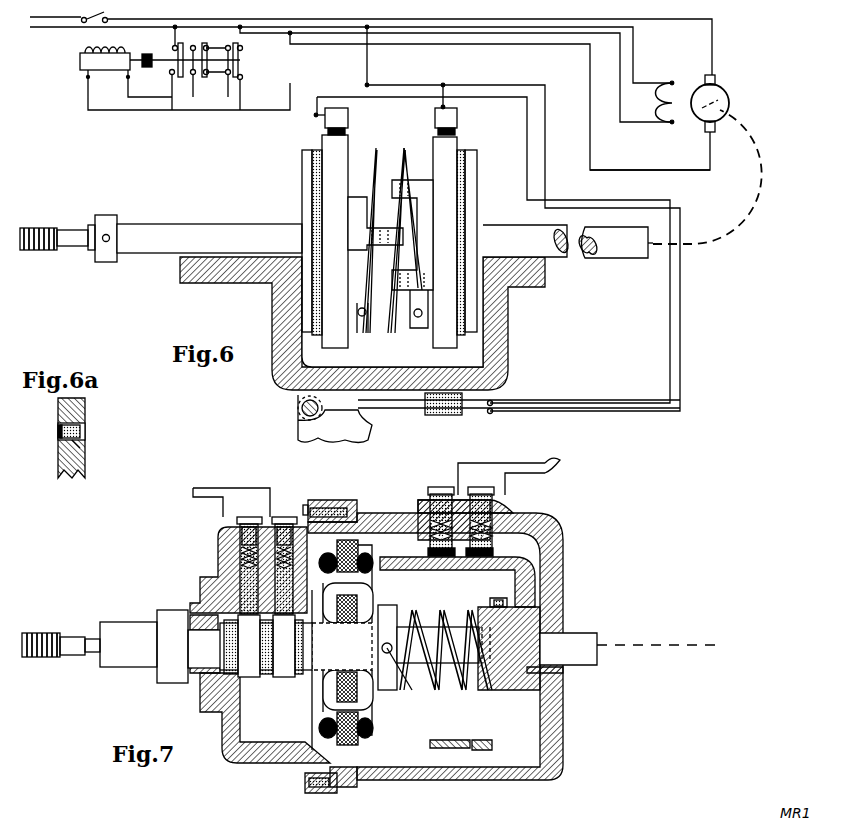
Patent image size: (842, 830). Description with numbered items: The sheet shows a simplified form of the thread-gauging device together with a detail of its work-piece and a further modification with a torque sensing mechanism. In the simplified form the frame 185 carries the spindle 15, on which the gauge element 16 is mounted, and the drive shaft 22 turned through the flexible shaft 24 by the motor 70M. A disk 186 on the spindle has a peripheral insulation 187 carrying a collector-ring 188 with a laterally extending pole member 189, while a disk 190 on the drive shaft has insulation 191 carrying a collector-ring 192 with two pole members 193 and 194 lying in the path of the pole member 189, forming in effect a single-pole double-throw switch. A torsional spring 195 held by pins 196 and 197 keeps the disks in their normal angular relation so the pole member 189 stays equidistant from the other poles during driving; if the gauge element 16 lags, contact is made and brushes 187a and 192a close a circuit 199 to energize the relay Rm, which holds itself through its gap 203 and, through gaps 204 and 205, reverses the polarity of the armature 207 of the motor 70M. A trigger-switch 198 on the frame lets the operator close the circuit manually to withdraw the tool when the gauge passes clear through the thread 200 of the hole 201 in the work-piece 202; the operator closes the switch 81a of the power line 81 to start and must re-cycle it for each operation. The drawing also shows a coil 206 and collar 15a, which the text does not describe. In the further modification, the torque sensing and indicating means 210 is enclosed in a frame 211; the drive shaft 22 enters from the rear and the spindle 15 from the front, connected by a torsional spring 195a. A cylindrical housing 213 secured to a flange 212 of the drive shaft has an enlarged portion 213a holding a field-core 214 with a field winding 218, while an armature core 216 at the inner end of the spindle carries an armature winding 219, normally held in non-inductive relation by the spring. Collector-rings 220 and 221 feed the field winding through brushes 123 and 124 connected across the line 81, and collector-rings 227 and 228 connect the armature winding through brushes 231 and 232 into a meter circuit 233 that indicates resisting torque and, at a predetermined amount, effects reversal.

In FIG. 6, the power line 81 is at (42, 22).
In FIG. 7, the power line 81 is at (517, 474).
In FIG. 6, the switch 81a is at (80, 30).
In FIG. 6, the relay Rm is at (80, 62).
In FIG. 6, the gap 203 is at (173, 50).
In FIG. 6, the gap 204 is at (196, 85).
In FIG. 6, the gap 205 is at (232, 85).
In FIG. 6, the circuit 199 is at (405, 90).
In FIG. 6, the motor field coil 206 is at (683, 88).
In FIG. 6, the motor 70M is at (731, 93).
In FIG. 6, the armature 207 is at (703, 125).
In FIG. 6, the brush 187a is at (325, 120).
In FIG. 6, the peripheral insulation 187 is at (322, 145).
In FIG. 6, the collector-ring 188 is at (320, 176).
In FIG. 6, the pole member 189 is at (360, 225).
In FIG. 6, the pole member 193 is at (392, 180).
In FIG. 6, the torsional spring 195 is at (402, 155).
In FIG. 6, the brush 192a is at (457, 118).
In FIG. 6, the collector-ring 192 is at (460, 148).
In FIG. 6, the insulation 191 is at (470, 180).
In FIG. 6, the gauge element 16 is at (36, 226).
In FIG. 7, the gauge element 16 is at (42, 632).
In FIG. 6, the collar 15a is at (107, 220).
In FIG. 7, the collar 15a is at (135, 658).
In FIG. 6, the spindle 15 is at (181, 223).
In FIG. 7, the spindle 15 is at (210, 670).
In FIG. 6, the pin 196 is at (358, 308).
In FIG. 6, the pin 197 is at (422, 308).
In FIG. 6, the drive shaft 22 is at (610, 250).
In FIG. 7, the drive shaft 22 is at (580, 655).
In FIG. 6, the flexible shaft 24 is at (742, 228).
In FIG. 7, the flexible shaft 24 is at (697, 644).
In FIG. 6, the frame 185 is at (510, 346).
In FIG. 6, the disk 190 is at (495, 372).
In FIG. 6, the pole member 194 is at (392, 300).
In FIG. 6, the disk 186 is at (333, 350).
In FIG. 6, the trigger-switch 198 is at (385, 426).
In FIG. 6A, the thread 200 is at (86, 436).
In FIG. 6A, the hole 201 is at (82, 452).
In FIG. 6A, the work-piece 202 is at (86, 468).
In FIG. 7, the circuit 233 is at (214, 486).
In FIG. 7, the brush 231 is at (247, 516).
In FIG. 7, the brush 232 is at (287, 515).
In FIG. 7, the field winding 218 is at (352, 545).
In FIG. 7, the brush 123 is at (435, 488).
In FIG. 7, the brush 124 is at (480, 488).
In FIG. 7, the collector-ring 221 is at (493, 550).
In FIG. 7, the collector-ring 220 is at (430, 556).
In FIG. 7, the cylindrical housing 213 is at (522, 562).
In FIG. 7, the armature winding 219 is at (352, 605).
In FIG. 7, the armature core 216 is at (394, 603).
In FIG. 7, the collector-ring 227 is at (248, 675).
In FIG. 7, the collector-ring 228 is at (283, 675).
In FIG. 7, the torsional spring 195a is at (460, 688).
In FIG. 7, the frame 211 is at (556, 740).
In FIG. 7, the flange 212 is at (505, 745).
In FIG. 7, the torque sensing and indicating means 210 is at (383, 707).
In FIG. 7, the enlarged portion 213a is at (402, 770).
In FIG. 7, the field-core 214 is at (367, 752).